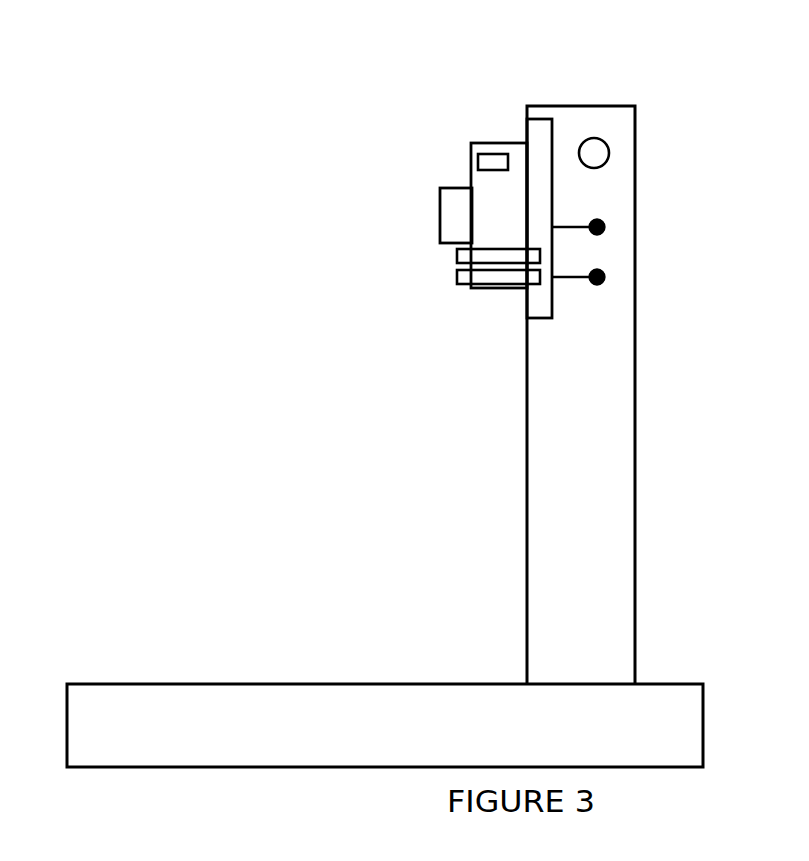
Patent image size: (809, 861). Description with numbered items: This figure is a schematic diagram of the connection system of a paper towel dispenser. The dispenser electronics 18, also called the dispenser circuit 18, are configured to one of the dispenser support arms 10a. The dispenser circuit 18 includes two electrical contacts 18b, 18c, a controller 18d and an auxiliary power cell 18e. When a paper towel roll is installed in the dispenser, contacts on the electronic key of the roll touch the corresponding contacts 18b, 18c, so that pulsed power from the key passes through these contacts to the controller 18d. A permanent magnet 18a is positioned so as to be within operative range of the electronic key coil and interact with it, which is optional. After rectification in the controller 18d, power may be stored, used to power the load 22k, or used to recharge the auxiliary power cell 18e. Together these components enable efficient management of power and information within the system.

The dispenser support arm 10a is at (617, 383).
The dispenser electronics 18 is at (680, 219).
The permanent magnet 18a is at (478, 158).
The electrical contact 18b is at (457, 277).
The electrical contact 18c is at (457, 255).
The controller 18d is at (539, 119).
The auxiliary power cell 18e is at (594, 153).
The load 22k is at (597, 253).